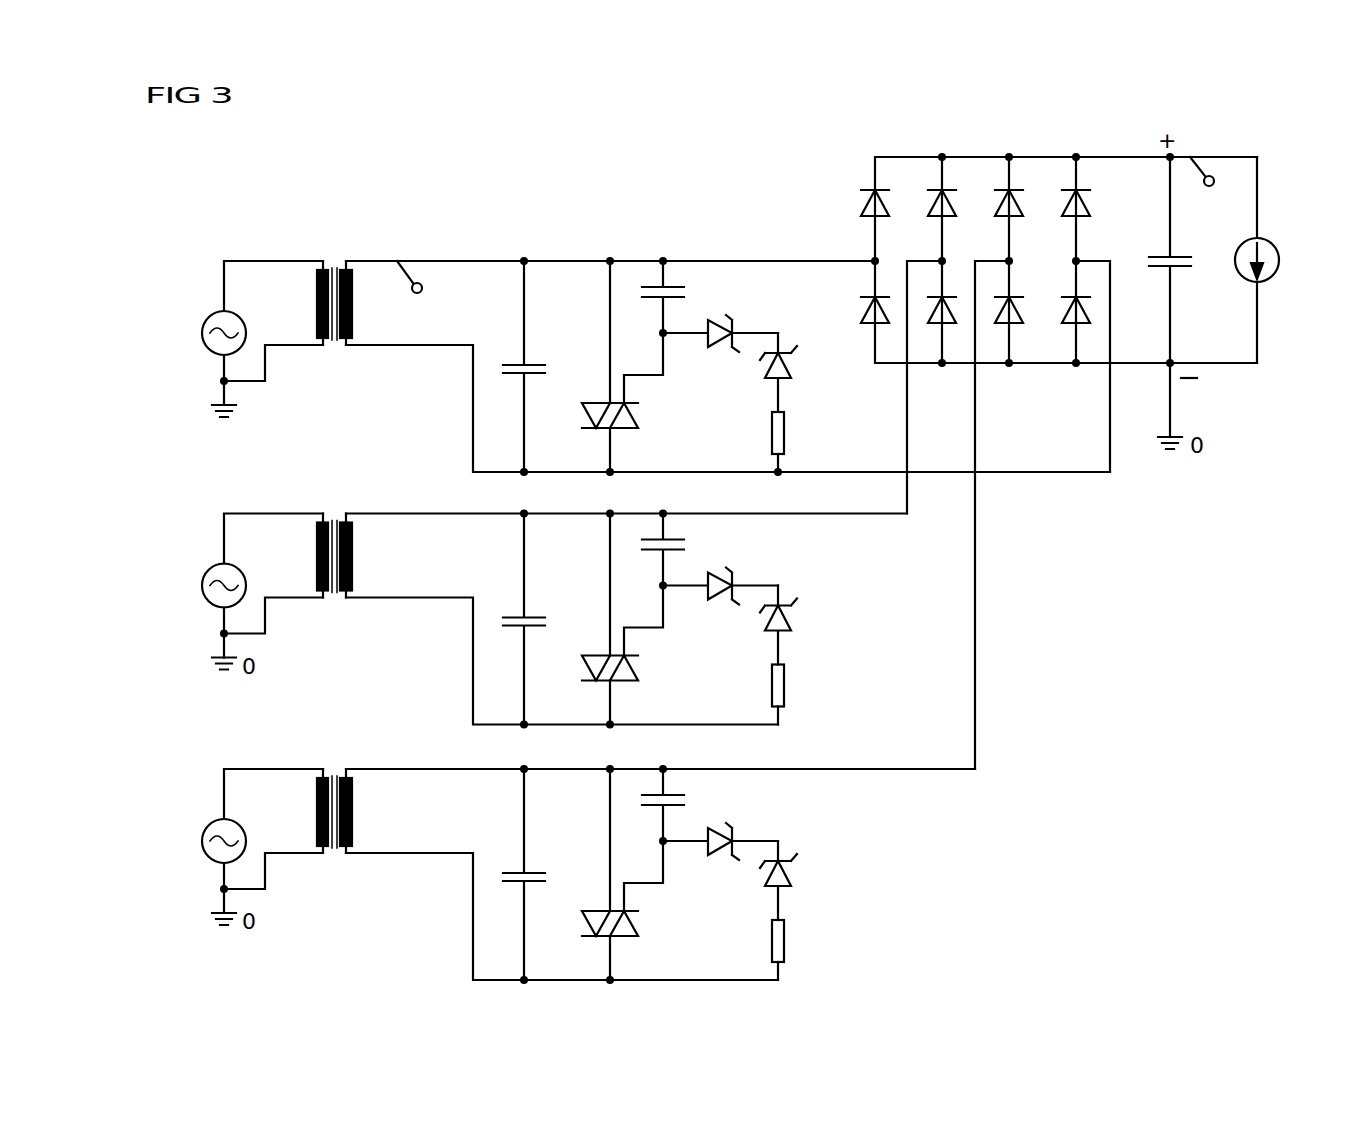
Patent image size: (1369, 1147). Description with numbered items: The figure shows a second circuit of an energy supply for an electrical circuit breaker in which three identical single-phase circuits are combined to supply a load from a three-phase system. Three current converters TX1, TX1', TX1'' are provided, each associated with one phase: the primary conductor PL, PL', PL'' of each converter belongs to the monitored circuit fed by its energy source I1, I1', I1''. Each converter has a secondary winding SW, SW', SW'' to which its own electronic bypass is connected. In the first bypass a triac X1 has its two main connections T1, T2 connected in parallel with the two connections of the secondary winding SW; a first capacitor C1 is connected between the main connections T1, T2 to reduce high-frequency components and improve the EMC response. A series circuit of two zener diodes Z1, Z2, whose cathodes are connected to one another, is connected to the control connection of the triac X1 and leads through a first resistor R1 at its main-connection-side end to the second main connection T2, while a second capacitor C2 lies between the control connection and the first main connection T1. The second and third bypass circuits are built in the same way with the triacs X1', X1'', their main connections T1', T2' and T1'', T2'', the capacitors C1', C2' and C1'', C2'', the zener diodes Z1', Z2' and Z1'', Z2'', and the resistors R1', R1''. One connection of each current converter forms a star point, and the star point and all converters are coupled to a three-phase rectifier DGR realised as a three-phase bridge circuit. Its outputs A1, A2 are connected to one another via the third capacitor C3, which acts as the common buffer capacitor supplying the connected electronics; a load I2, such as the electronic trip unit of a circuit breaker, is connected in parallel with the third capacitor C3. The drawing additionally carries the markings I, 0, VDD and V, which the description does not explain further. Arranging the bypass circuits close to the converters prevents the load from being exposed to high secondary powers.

The energy source I1 is at (202, 323).
The primary conductor PL is at (290, 303).
The current converter TX1 is at (338, 286).
The secondary winding SW is at (382, 303).
The current measurement point I is at (416, 283).
The ground 0 is at (233, 413).
The first capacitor C1 is at (517, 366).
The first main connection T1 is at (628, 247).
The second main connection T2 is at (635, 458).
The triac X1 is at (618, 366).
The second capacitor C2 is at (696, 297).
The zener diode Z1 is at (720, 357).
The zener diode Z2 is at (805, 372).
The first resistor R1 is at (812, 442).
The energy source I1' is at (202, 576).
The primary conductor PL' is at (290, 556).
The current converter TX1' is at (340, 539).
The secondary winding SW' is at (384, 556).
The first capacitor C1' is at (517, 619).
The first main connection T1' is at (631, 500).
The second main connection T2' is at (638, 711).
The triac X1' is at (618, 619).
The second capacitor C2' is at (699, 550).
The zener diode Z1' is at (720, 610).
The zener diode Z2' is at (808, 625).
The first resistor R1' is at (814, 695).
The energy source I1'' is at (202, 831).
The primary conductor PL'' is at (290, 811).
The current converter TX1'' is at (343, 794).
The secondary winding SW'' is at (387, 811).
The first capacitor C1'' is at (517, 874).
The first main connection T1'' is at (634, 755).
The second main connection T2'' is at (641, 966).
The triac X1'' is at (618, 874).
The second capacitor C2'' is at (701, 805).
The zener diode Z1'' is at (720, 865).
The zener diode Z2'' is at (810, 880).
The first resistor R1'' is at (817, 950).
The three-phase rectifier DGR is at (976, 152).
The output A1 is at (1148, 144).
The output A2 is at (1147, 381).
The supply voltage VDD is at (1213, 142).
The voltage measurement point V is at (1212, 176).
The third capacitor C3 is at (1178, 268).
The load I2 is at (1280, 246).